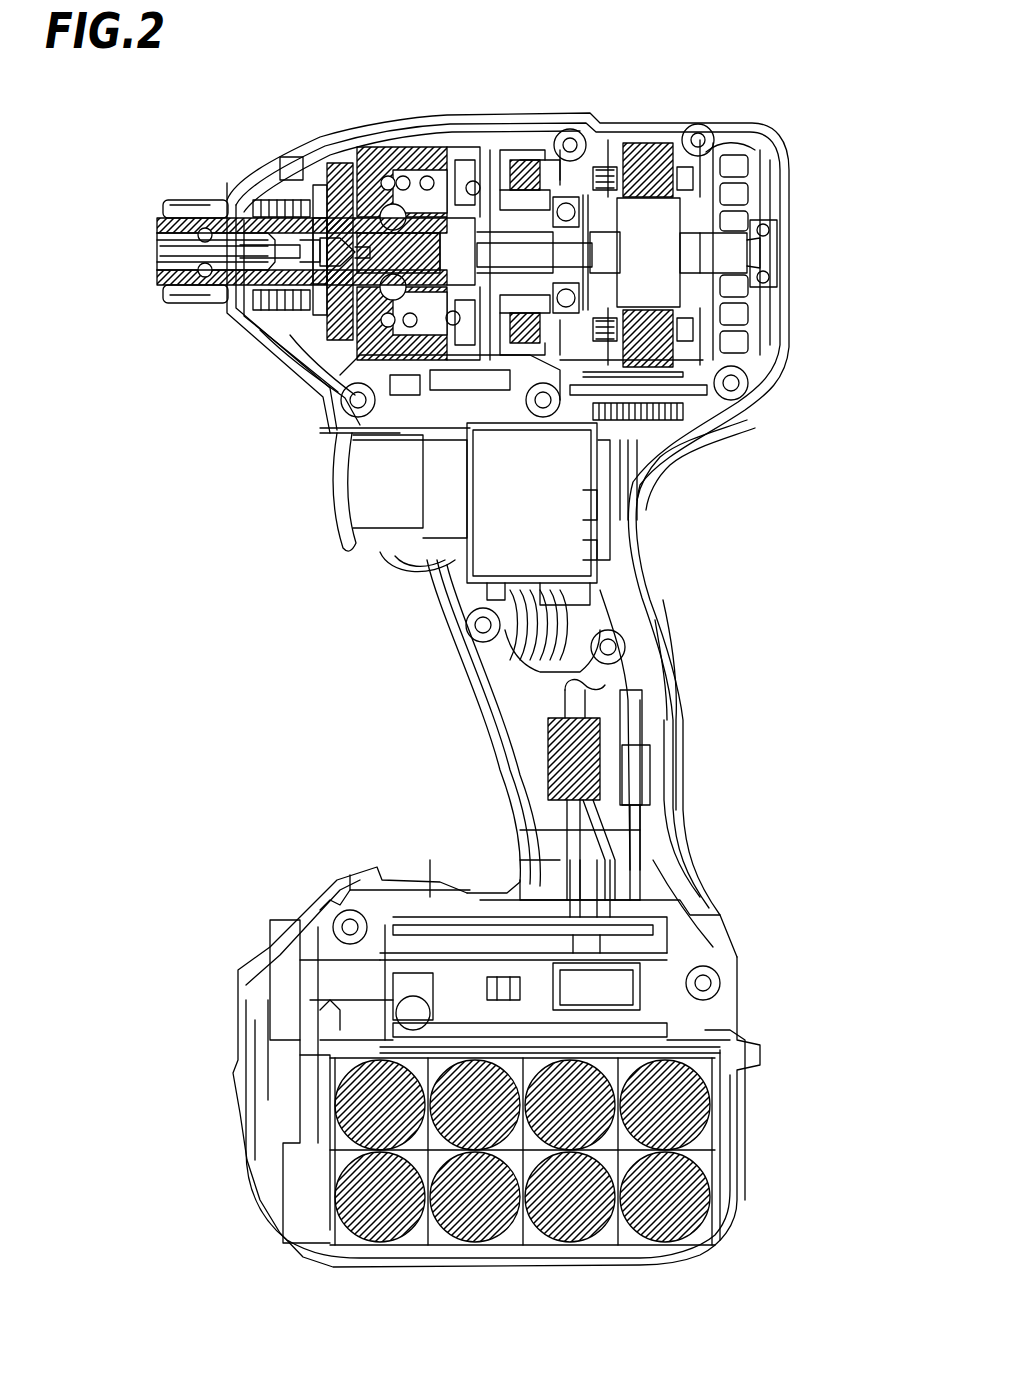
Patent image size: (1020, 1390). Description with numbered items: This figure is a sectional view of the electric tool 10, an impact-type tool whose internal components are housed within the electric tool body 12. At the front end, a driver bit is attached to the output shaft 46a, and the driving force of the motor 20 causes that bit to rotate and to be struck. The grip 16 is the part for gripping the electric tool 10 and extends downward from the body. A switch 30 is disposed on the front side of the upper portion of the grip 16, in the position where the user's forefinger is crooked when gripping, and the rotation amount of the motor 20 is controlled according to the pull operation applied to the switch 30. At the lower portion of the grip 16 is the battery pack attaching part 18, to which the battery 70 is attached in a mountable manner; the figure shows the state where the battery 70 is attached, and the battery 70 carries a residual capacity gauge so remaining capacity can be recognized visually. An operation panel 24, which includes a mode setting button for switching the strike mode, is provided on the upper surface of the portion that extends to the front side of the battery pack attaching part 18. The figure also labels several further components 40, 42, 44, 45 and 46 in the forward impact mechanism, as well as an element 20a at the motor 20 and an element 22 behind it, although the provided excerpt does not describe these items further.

The electric tool 10 is at (808, 112).
The electric tool body 12 is at (592, 118).
The grip 16 is at (684, 690).
The battery pack attaching part 18 is at (733, 932).
The motor 20 is at (663, 142).
The motor shaft 20a is at (497, 180).
The fan 22 is at (740, 258).
The operation panel 24 is at (433, 895).
The switch 30 is at (362, 483).
The hammer case 40 is at (528, 160).
The spindle 42 is at (375, 235).
The hammer 44 is at (425, 165).
The spring 45 is at (470, 190).
The anvil 46 is at (250, 215).
The output shaft 46a is at (162, 245).
The battery 70 is at (700, 1112).